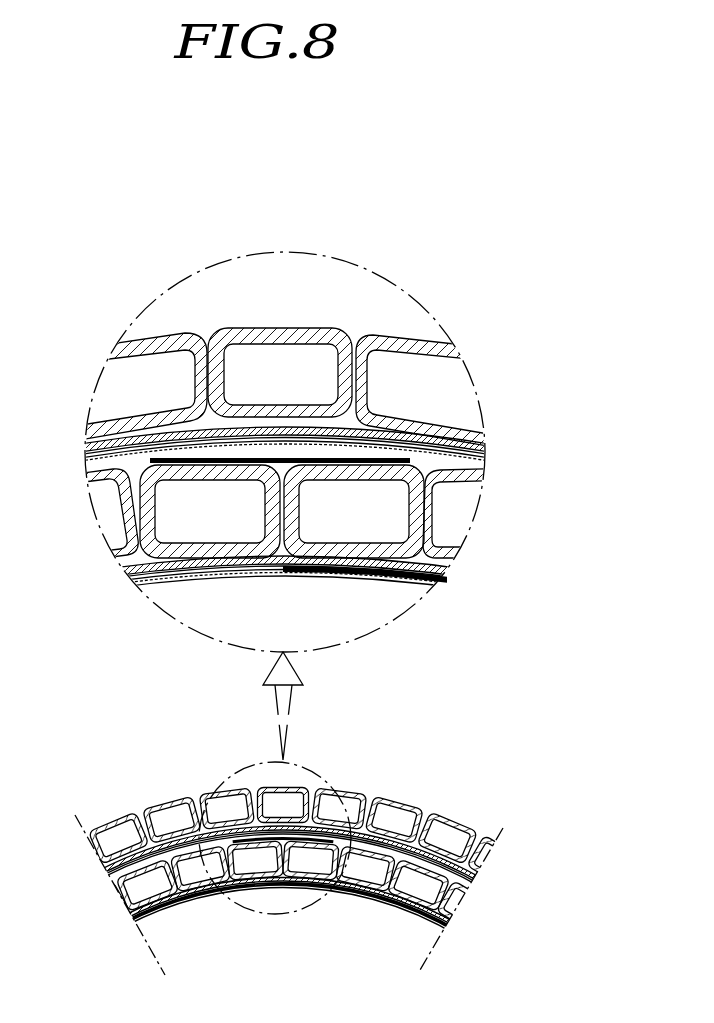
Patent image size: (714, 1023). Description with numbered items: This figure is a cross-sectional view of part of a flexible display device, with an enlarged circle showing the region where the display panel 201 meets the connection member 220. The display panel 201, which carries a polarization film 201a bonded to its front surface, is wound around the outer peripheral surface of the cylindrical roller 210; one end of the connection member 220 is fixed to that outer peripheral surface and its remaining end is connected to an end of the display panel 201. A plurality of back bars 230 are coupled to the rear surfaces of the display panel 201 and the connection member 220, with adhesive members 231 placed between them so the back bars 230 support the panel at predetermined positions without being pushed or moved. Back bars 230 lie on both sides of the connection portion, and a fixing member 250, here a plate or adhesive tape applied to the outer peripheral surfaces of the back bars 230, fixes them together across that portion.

The back bars 230 is at (283, 340).
The adhesive members 231 is at (483, 445).
The display panel 201 is at (483, 458).
The polarization film 201a is at (483, 461).
The fixing member 250 is at (313, 458).
The connection member 220 is at (445, 580).
The roller 210 is at (313, 578).